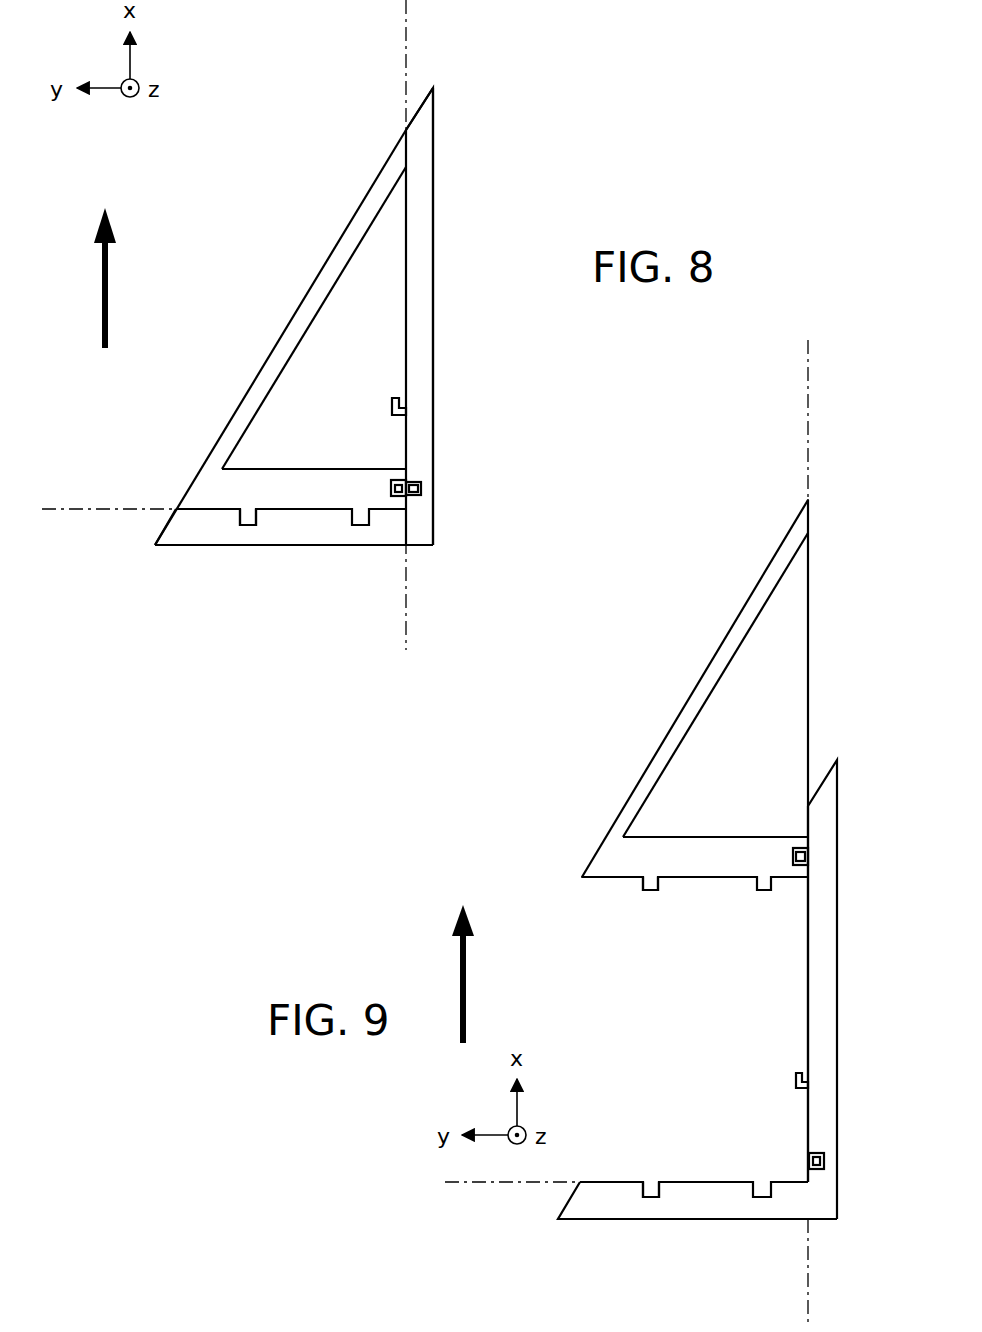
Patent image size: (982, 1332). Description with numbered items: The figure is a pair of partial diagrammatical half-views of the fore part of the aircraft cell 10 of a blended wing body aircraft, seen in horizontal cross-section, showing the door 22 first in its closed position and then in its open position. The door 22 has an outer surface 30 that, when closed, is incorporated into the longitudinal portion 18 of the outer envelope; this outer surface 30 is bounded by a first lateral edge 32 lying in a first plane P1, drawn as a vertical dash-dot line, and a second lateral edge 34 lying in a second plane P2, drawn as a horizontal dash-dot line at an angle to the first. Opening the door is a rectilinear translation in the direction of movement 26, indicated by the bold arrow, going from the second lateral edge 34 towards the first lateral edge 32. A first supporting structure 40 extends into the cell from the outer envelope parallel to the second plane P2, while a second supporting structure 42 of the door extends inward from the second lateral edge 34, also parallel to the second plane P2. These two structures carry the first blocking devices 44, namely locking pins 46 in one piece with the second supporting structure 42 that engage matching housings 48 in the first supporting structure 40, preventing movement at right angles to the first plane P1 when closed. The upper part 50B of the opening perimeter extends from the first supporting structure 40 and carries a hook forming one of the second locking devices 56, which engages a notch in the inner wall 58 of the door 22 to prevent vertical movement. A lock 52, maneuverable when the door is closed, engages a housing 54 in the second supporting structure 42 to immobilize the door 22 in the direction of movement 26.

In FIG. 8, the aircraft cell 10 is at (324, 359).
In FIG. 9, the aircraft cell 10 is at (743, 871).
In FIG. 8, the longitudinal portion 18 is at (270, 146).
In FIG. 9, the longitudinal portion 18 is at (720, 507).
In FIG. 8, the door 22 is at (294, 305).
In FIG. 9, the door 22 is at (751, 653).
In FIG. 8, the direction of movement 26 is at (107, 265).
In FIG. 9, the direction of movement 26 is at (467, 963).
In FIG. 8, the outer surface 30 is at (287, 327).
In FIG. 9, the outer surface 30 is at (711, 657).
In FIG. 8, the first lateral edge 32 is at (405, 130).
In FIG. 9, the first lateral edge 32 is at (810, 500).
In FIG. 8, the second lateral edge 34 is at (178, 505).
In FIG. 9, the second lateral edge 34 is at (583, 880).
In FIG. 8, the first supporting structure 40 is at (290, 540).
In FIG. 9, the first supporting structure 40 is at (694, 1210).
In FIG. 8, the second supporting structure 42 is at (293, 485).
In FIG. 9, the second supporting structure 42 is at (712, 855).
In FIG. 8, the first blocking devices 44 is at (194, 584).
In FIG. 8, the locking pins or bolts 46 is at (255, 521).
In FIG. 9, the locking pins or bolts 46 is at (650, 891).
In FIG. 8, the housings 48 is at (240, 512).
In FIG. 9, the housings 48 is at (648, 1181).
In FIG. 8, the upper part 50B is at (468, 316).
In FIG. 9, the upper part 50B is at (871, 859).
In FIG. 8, the lock 52 is at (422, 488).
In FIG. 9, the lock 52 is at (825, 1160).
In FIG. 8, the housing 54 is at (397, 497).
In FIG. 9, the housing 54 is at (810, 857).
In FIG. 8, the second locking devices 56 is at (394, 402).
In FIG. 9, the second locking devices 56 is at (797, 1078).
In FIG. 8, the inner wall 58 is at (406, 200).
In FIG. 9, the inner wall 58 is at (810, 688).
In FIG. 8, the first plane P1 is at (406, 600).
In FIG. 9, the first plane P1 is at (808, 1270).
In FIG. 8, the second plane P2 is at (90, 512).
In FIG. 9, the second plane P2 is at (500, 1186).